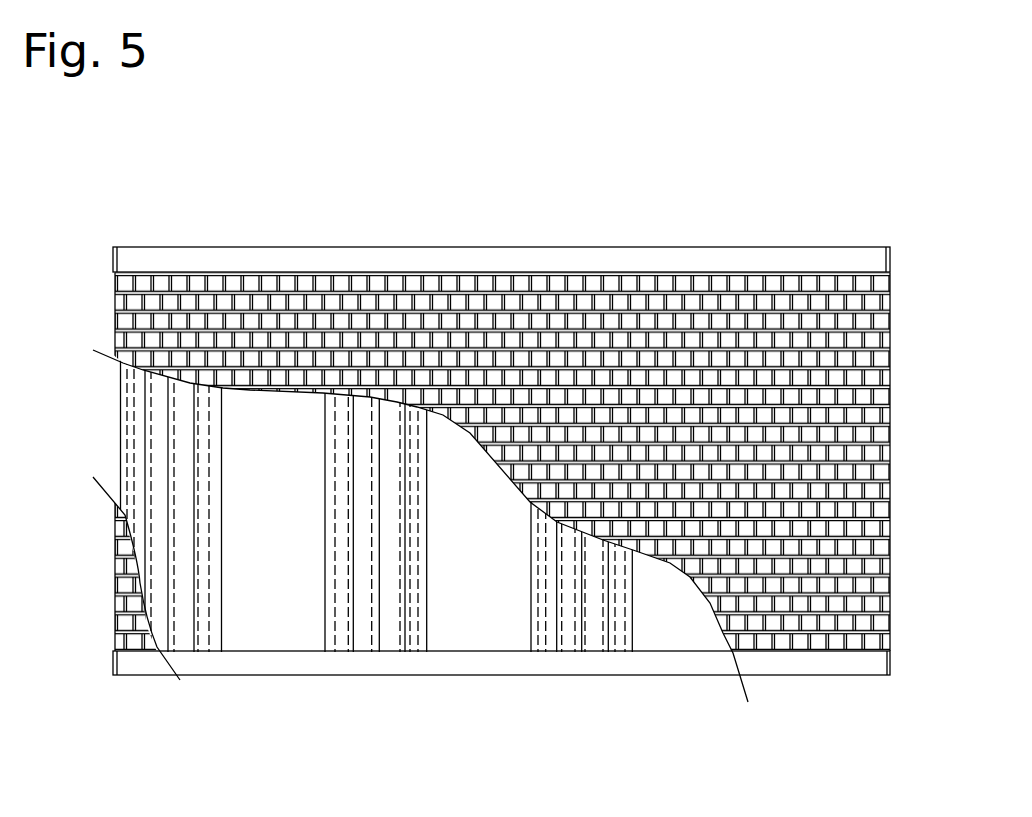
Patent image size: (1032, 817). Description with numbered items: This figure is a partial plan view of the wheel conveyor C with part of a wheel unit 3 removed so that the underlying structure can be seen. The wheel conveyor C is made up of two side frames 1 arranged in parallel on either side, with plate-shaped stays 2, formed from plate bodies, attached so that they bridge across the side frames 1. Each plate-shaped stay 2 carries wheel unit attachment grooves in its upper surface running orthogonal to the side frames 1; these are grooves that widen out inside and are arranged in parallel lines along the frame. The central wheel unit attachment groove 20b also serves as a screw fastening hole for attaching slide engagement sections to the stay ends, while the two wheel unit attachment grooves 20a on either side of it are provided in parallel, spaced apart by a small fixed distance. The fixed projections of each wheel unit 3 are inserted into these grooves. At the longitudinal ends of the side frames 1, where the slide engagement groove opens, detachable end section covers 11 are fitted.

The side frame 1 is at (647, 260).
The plate-shaped stay 2 is at (186, 585).
The wheel unit 3 is at (433, 290).
The end section cover 11 is at (113, 247).
The wheel unit attachment groove 20a is at (350, 653).
The central wheel unit attachment groove 20b is at (380, 653).
The wheel conveyor C is at (568, 188).